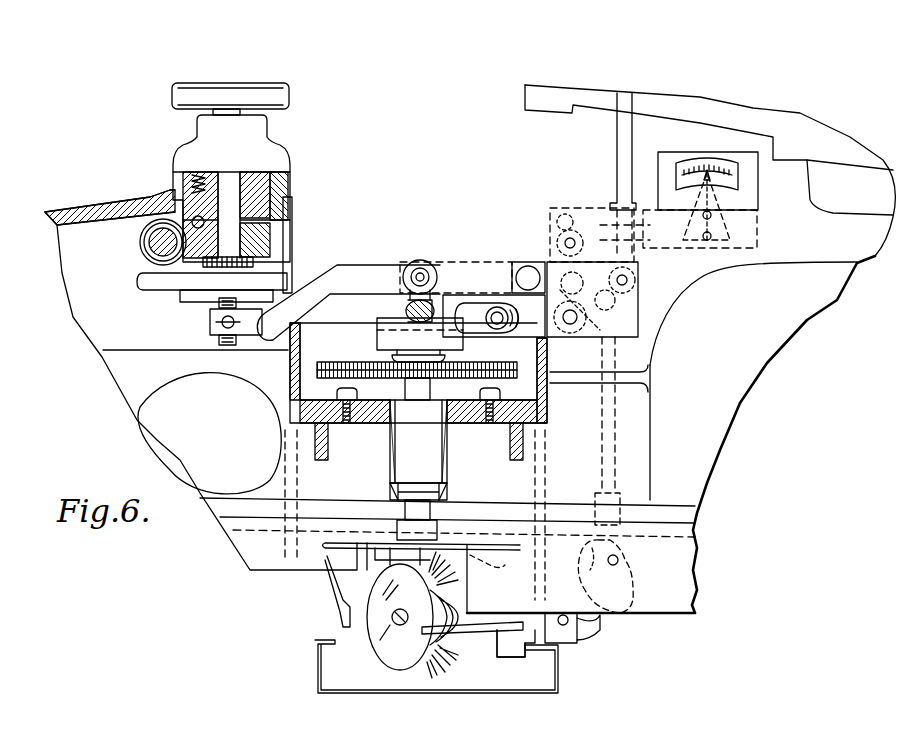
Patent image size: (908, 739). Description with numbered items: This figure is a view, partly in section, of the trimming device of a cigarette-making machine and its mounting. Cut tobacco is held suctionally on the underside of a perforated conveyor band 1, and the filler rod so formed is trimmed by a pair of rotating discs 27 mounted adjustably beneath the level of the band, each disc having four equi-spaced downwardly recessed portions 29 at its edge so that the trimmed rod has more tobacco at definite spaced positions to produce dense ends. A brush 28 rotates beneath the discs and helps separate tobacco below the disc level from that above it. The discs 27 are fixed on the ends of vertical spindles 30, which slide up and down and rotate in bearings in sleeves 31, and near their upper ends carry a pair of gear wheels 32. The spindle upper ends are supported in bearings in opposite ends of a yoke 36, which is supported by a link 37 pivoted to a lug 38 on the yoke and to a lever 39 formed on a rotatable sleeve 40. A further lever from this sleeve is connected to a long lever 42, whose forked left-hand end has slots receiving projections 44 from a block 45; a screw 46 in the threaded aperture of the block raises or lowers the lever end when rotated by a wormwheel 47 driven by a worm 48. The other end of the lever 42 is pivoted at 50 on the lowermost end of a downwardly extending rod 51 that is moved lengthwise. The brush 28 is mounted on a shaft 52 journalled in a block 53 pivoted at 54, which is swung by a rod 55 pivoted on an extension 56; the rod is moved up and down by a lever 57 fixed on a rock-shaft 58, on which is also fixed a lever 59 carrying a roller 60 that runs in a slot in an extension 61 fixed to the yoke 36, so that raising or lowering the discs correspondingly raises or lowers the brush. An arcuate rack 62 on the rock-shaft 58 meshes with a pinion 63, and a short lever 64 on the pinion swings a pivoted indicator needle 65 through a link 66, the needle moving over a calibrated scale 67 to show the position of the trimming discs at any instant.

The conveyor band 1 is at (716, 538).
The rotating discs 27 is at (492, 549).
The brush 28 is at (443, 670).
The recessed portions 29 is at (320, 565).
The vertical spindles 30 is at (430, 390).
The sleeves 31 is at (408, 445).
The gear wheels 32 is at (485, 371).
The yoke 36 is at (378, 342).
The link 37 is at (408, 299).
The lug 38 is at (406, 313).
The lever 39 is at (474, 263).
The rotatable sleeve 40 is at (516, 263).
The long lever 42 is at (372, 265).
The projections 44 is at (210, 326).
The block 45 is at (212, 314).
The screw 46 is at (233, 345).
The wormwheel 47 is at (262, 250).
The worm 48 is at (140, 243).
The pivot 50 is at (637, 280).
The downwardly extending rod 51 is at (615, 152).
The shaft 52 is at (470, 637).
The block 53 is at (528, 658).
The pivot 54 is at (568, 642).
The rod 55 is at (603, 435).
The extension 56 is at (620, 561).
The lever 57 is at (570, 325).
The rock-shaft 58 is at (570, 328).
The lever 59 is at (532, 328).
The roller 60 is at (488, 334).
The extension 61 is at (462, 303).
The arcuate rack 62 is at (586, 274).
The pinion 63 is at (553, 228).
The short lever 64 is at (587, 211).
The indicator needle 65 is at (713, 190).
The link 66 is at (700, 240).
The scale 67 is at (735, 172).